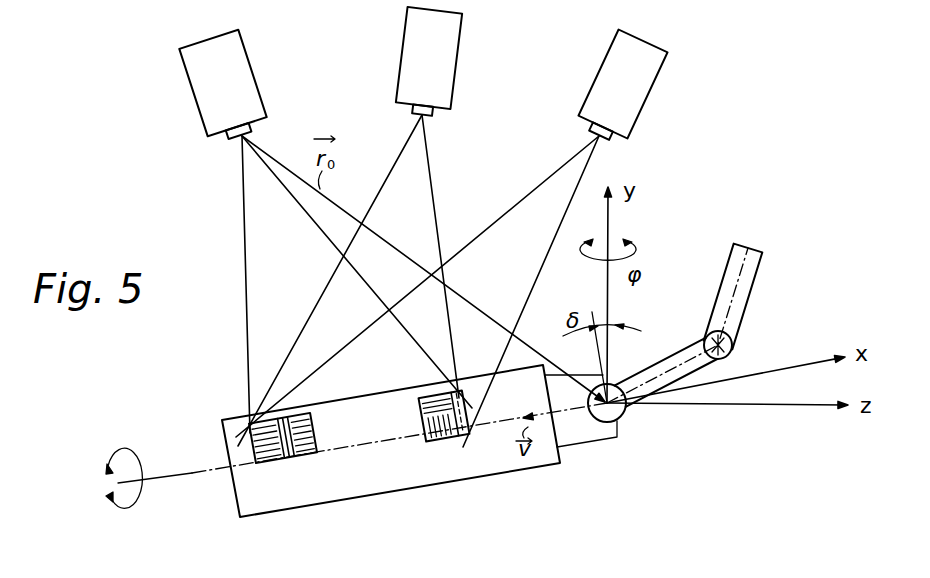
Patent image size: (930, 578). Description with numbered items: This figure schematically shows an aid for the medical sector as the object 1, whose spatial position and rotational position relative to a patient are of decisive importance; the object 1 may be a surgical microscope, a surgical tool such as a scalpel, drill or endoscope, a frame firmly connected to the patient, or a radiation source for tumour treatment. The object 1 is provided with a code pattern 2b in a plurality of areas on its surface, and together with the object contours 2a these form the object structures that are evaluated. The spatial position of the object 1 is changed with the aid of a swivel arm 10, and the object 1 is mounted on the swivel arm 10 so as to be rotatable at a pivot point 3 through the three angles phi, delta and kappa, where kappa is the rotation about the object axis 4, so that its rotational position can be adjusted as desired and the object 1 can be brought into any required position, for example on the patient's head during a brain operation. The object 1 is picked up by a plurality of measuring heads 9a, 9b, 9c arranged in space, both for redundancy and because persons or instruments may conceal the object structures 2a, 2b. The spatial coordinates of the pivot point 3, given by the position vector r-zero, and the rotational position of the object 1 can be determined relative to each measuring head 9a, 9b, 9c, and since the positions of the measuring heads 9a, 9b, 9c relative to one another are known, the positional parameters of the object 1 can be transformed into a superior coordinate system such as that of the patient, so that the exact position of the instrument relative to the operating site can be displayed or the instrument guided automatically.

The object 1 is at (264, 507).
The object contours 2a is at (222, 418).
The code pattern 2b is at (273, 453).
The pivot point 3 is at (620, 416).
The object axis 4 is at (171, 481).
The measuring head 9a is at (240, 62).
The measuring head 9b is at (461, 55).
The measuring head 9c is at (656, 62).
The swivel arm 10 is at (748, 272).